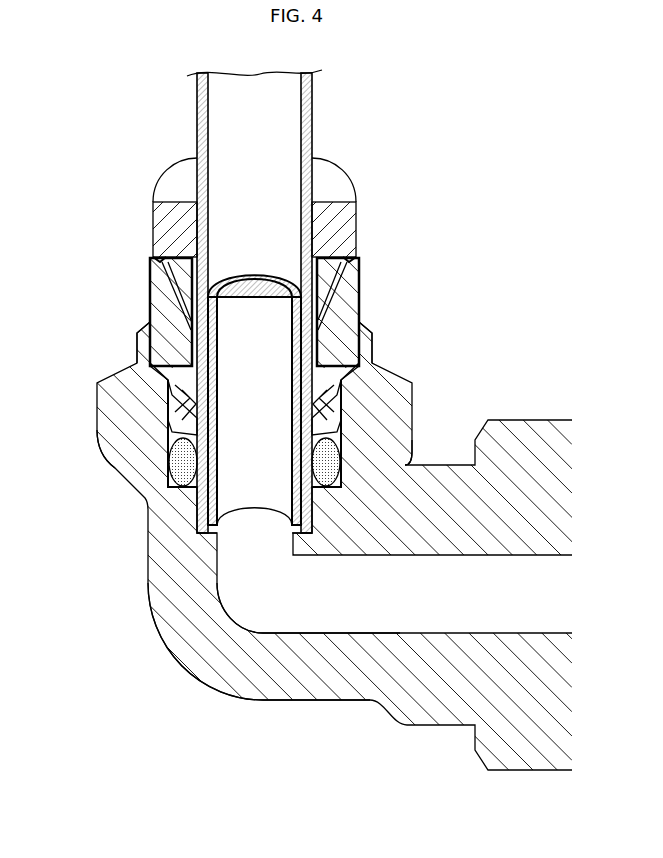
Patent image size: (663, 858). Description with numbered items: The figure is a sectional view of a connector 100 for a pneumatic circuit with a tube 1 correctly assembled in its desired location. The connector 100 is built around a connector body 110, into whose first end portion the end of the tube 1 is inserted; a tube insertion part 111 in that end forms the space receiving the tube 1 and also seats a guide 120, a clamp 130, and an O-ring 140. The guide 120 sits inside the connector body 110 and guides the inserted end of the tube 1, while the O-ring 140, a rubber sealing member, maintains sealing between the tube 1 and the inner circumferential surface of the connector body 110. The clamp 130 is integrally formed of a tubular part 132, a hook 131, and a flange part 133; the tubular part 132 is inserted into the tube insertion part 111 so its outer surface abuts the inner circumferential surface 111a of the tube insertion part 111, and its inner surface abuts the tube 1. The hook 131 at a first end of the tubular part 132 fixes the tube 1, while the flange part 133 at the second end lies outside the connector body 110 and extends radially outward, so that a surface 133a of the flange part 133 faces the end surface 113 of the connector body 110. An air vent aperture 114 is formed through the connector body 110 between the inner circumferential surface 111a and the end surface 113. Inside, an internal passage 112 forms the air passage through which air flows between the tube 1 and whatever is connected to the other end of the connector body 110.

The tube 1 is at (307, 133).
The connector 100 is at (515, 153).
The connector body 110 is at (400, 410).
The tube insertion part 111 is at (175, 418).
The inner circumferential surface of the tube insertion part 111a is at (148, 323).
The internal passage 112 is at (247, 607).
The end surface 113 is at (152, 252).
The air vent aperture 114 is at (163, 280).
The guide 120 is at (297, 312).
The clamp 130 is at (370, 337).
The hook 131 is at (380, 485).
The tubular part 132 is at (367, 323).
The flange part 133 is at (338, 218).
The surface of the flange part 133a is at (156, 256).
The O-ring 140 is at (178, 470).